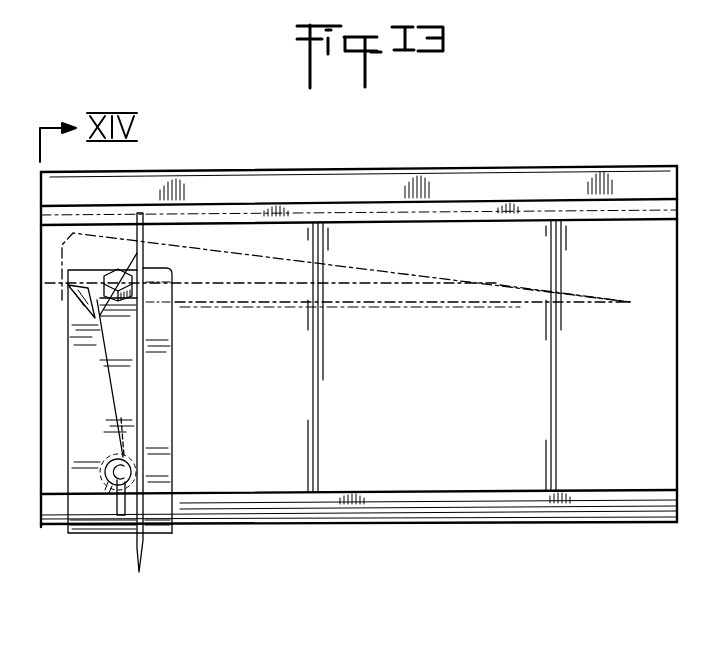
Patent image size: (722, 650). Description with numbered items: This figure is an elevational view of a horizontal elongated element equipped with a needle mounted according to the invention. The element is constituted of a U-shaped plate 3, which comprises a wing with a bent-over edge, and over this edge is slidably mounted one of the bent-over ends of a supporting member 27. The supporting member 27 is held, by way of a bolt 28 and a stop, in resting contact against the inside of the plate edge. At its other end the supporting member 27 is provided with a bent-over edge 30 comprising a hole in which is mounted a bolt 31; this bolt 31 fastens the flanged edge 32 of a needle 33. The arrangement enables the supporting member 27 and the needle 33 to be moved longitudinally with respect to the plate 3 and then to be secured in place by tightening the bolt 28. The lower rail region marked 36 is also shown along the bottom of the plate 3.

The U-shaped plate 3 is at (359, 346).
The supporting member 27 is at (170, 471).
The bolt 28 is at (112, 490).
The bent-over edge 30 is at (161, 315).
The bolt 31 is at (116, 270).
The flanged edge 32 is at (116, 391).
The needle 33 is at (345, 272).
The lower rail 36 is at (488, 497).